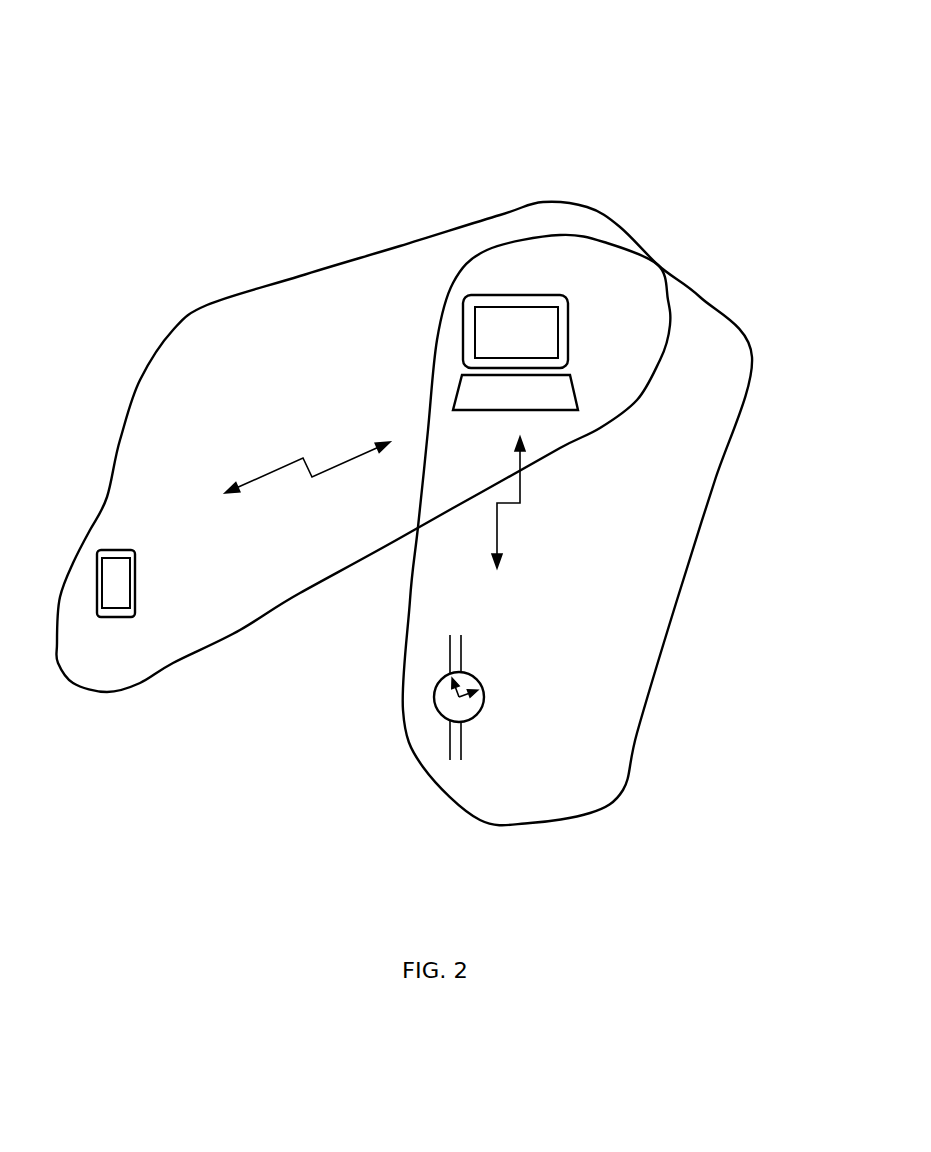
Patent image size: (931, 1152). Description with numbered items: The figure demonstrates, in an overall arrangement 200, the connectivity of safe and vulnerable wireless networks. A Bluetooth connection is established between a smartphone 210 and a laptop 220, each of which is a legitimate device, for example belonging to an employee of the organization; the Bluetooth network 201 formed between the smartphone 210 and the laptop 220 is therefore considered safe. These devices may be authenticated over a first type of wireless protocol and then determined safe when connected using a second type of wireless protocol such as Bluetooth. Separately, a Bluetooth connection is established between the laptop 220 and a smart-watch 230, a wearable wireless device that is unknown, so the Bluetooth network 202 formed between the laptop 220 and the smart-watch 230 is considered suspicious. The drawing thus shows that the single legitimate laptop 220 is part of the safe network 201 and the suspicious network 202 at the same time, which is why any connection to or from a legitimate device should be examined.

The wireless communication system 200 is at (427, 431).
The Bluetooth network 201 is at (577, 200).
The Bluetooth network 202 is at (623, 750).
The smartphone 210 is at (137, 560).
The laptop 220 is at (578, 300).
The smart-watch 230 is at (492, 672).